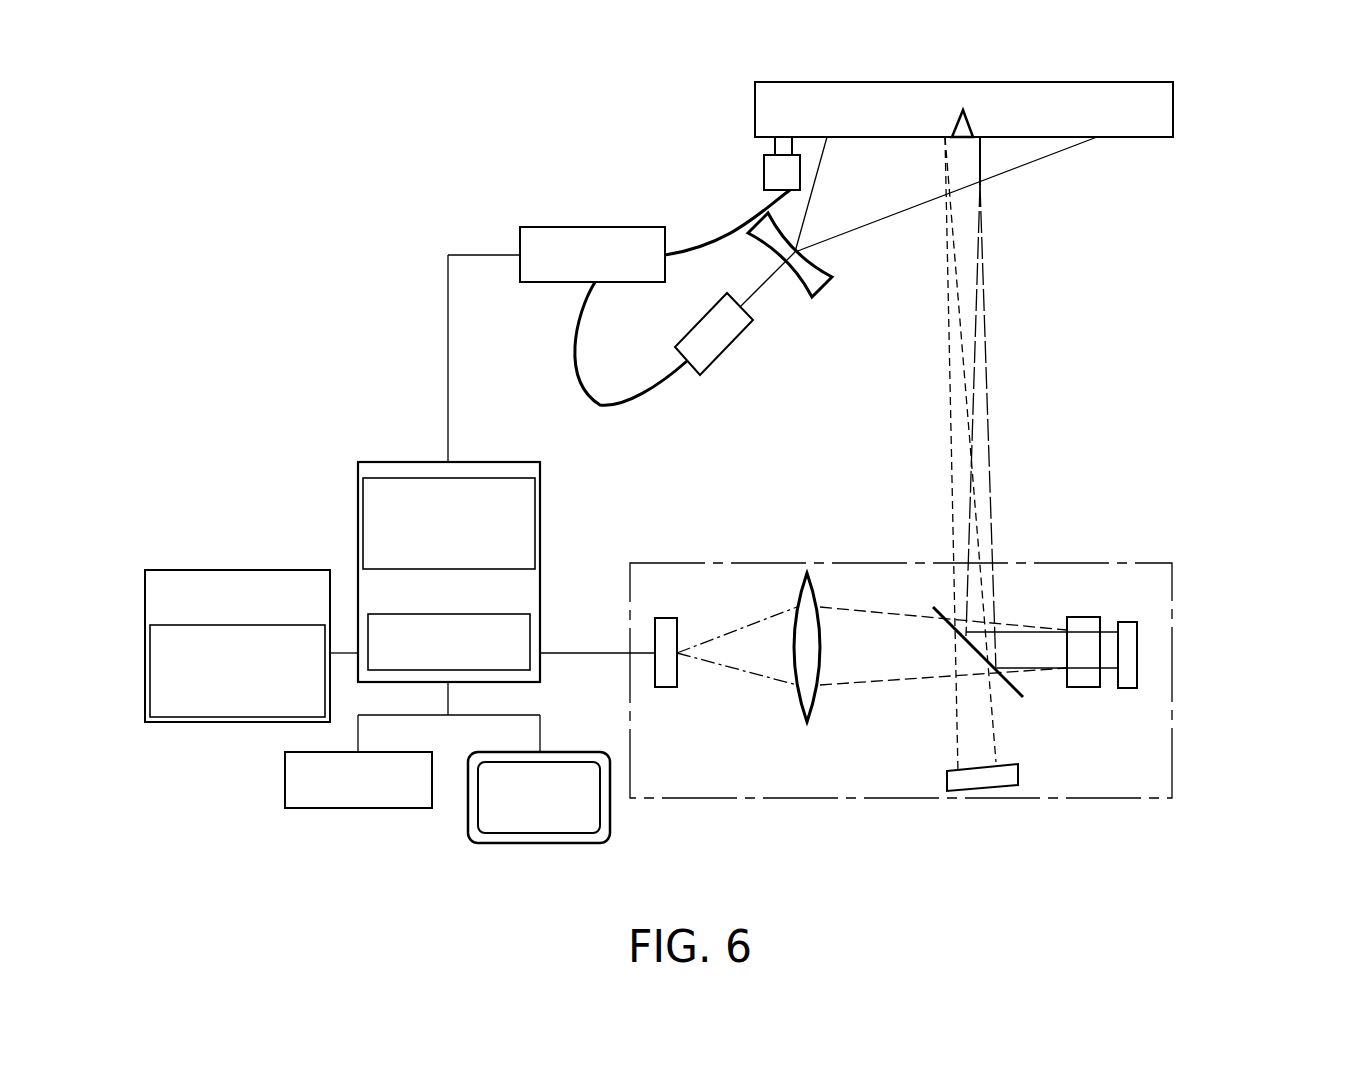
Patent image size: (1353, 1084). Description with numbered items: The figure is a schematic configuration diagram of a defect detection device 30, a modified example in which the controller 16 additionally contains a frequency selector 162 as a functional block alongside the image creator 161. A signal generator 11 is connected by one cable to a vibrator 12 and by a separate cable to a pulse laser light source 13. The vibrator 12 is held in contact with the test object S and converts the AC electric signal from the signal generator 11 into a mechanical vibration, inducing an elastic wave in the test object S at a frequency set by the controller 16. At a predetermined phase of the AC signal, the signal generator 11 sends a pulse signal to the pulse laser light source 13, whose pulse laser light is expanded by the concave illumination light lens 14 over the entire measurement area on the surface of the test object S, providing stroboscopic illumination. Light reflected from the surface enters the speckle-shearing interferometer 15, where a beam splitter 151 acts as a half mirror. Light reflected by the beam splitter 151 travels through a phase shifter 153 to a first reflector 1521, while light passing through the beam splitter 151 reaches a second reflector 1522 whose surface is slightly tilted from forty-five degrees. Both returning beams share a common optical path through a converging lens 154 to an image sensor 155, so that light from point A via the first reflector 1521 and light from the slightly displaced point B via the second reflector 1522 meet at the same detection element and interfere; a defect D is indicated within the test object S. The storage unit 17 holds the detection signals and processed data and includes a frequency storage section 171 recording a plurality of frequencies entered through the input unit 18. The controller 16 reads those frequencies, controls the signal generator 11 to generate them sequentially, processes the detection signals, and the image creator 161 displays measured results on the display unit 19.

The test object S is at (1145, 112).
The point A is at (980, 137).
The point B is at (943, 137).
The defect D is at (963, 110).
The signal generator 11 is at (567, 250).
The vibrator 12 is at (765, 170).
The pulse laser light source 13 is at (720, 335).
The illumination light lens 14 is at (810, 283).
The speckle-shearing interferometer 15 is at (1172, 563).
The controller 16 is at (540, 462).
The storage unit 17 is at (158, 568).
The input unit 18 is at (285, 808).
The display unit 19 is at (607, 843).
The defect detection device 30 is at (1225, 787).
The beam splitter 151 is at (948, 620).
The phase shifter 153 is at (1083, 617).
The converging lens 154 is at (807, 615).
The image sensor 155 is at (667, 617).
The image creator 161 is at (530, 614).
The frequency selector 162 is at (393, 477).
The frequency storage section 171 is at (172, 707).
The first reflector 1521 is at (1138, 653).
The second reflector 1522 is at (990, 780).